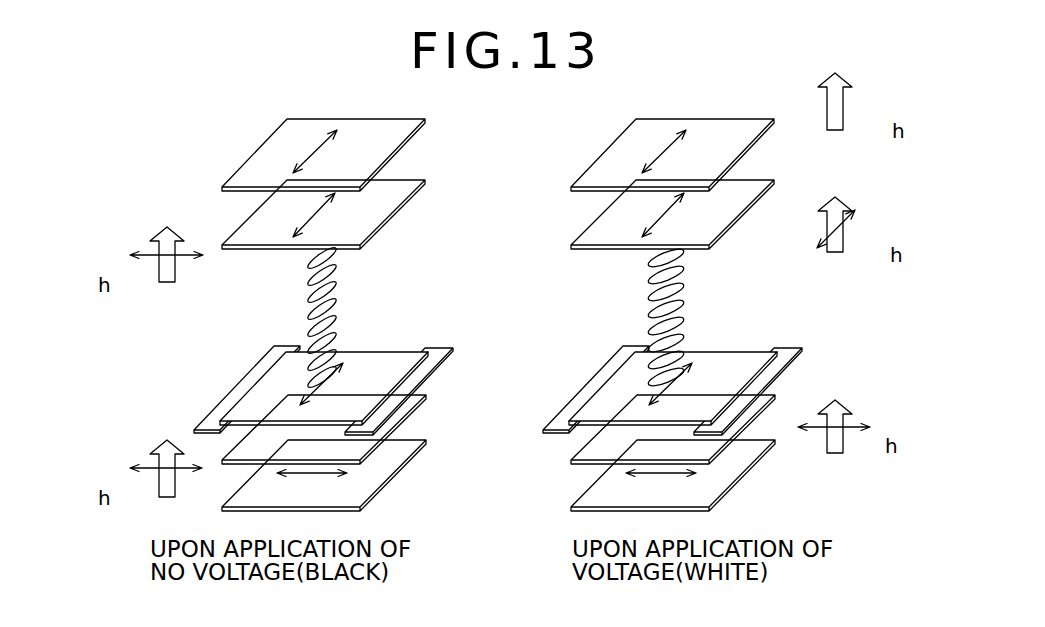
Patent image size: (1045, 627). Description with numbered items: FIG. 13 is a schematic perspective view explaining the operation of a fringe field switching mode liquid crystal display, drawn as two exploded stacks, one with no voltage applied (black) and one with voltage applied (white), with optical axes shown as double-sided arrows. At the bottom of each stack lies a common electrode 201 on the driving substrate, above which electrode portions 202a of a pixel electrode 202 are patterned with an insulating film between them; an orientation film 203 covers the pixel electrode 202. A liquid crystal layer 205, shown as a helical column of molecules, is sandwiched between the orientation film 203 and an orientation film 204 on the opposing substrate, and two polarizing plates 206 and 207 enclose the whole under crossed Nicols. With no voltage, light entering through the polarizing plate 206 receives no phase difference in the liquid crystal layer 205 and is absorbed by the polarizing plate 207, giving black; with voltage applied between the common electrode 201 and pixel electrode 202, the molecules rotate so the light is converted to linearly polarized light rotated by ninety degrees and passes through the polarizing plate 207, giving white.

The common electrode 201 is at (577, 458).
The pixel electrode 202 is at (505, 363).
The electrode portions 202a is at (462, 390).
The orientation film 203 is at (622, 362).
The orientation film 204 is at (387, 227).
The liquid crystal layer 205 is at (640, 308).
The polarizing plate 206 is at (573, 513).
The polarizing plate 207 is at (618, 137).